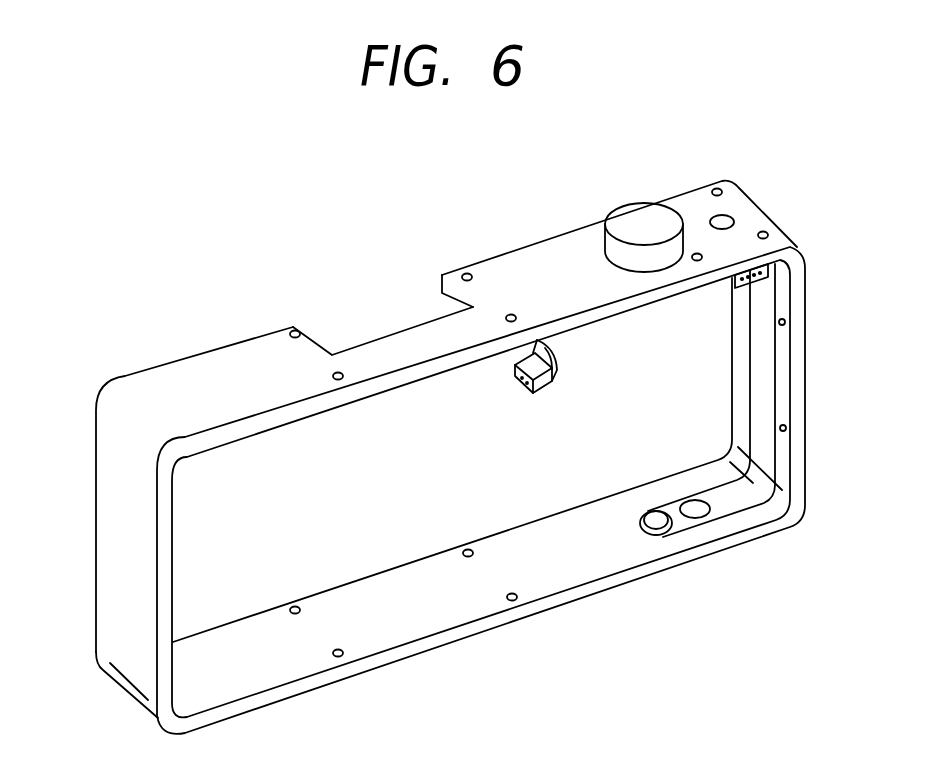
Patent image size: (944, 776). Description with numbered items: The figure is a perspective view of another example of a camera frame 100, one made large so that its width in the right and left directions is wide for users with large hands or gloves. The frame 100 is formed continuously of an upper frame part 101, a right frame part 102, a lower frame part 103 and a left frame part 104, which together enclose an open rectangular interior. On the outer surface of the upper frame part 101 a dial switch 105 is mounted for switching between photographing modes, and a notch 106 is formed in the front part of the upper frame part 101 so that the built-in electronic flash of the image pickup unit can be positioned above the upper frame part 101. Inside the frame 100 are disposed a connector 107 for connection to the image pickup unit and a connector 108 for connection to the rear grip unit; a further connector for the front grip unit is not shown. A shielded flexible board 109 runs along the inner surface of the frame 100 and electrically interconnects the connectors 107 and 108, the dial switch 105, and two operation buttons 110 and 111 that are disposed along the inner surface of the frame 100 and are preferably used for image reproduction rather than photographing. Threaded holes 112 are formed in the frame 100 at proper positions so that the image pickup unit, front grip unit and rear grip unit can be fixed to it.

The frame 100 is at (447, 425).
The upper frame part 101 is at (684, 214).
The right frame part 102 is at (118, 552).
The lower frame part 103 is at (483, 628).
The left frame part 104 is at (808, 380).
The dial switch 105 is at (637, 222).
The notch 106 is at (395, 326).
The connector 107 is at (548, 393).
The connector 108 is at (783, 263).
The shielded flexible board 109 is at (734, 497).
The operation button 110 is at (655, 524).
The operation button 111 is at (695, 510).
The threaded holes 112 is at (338, 372).